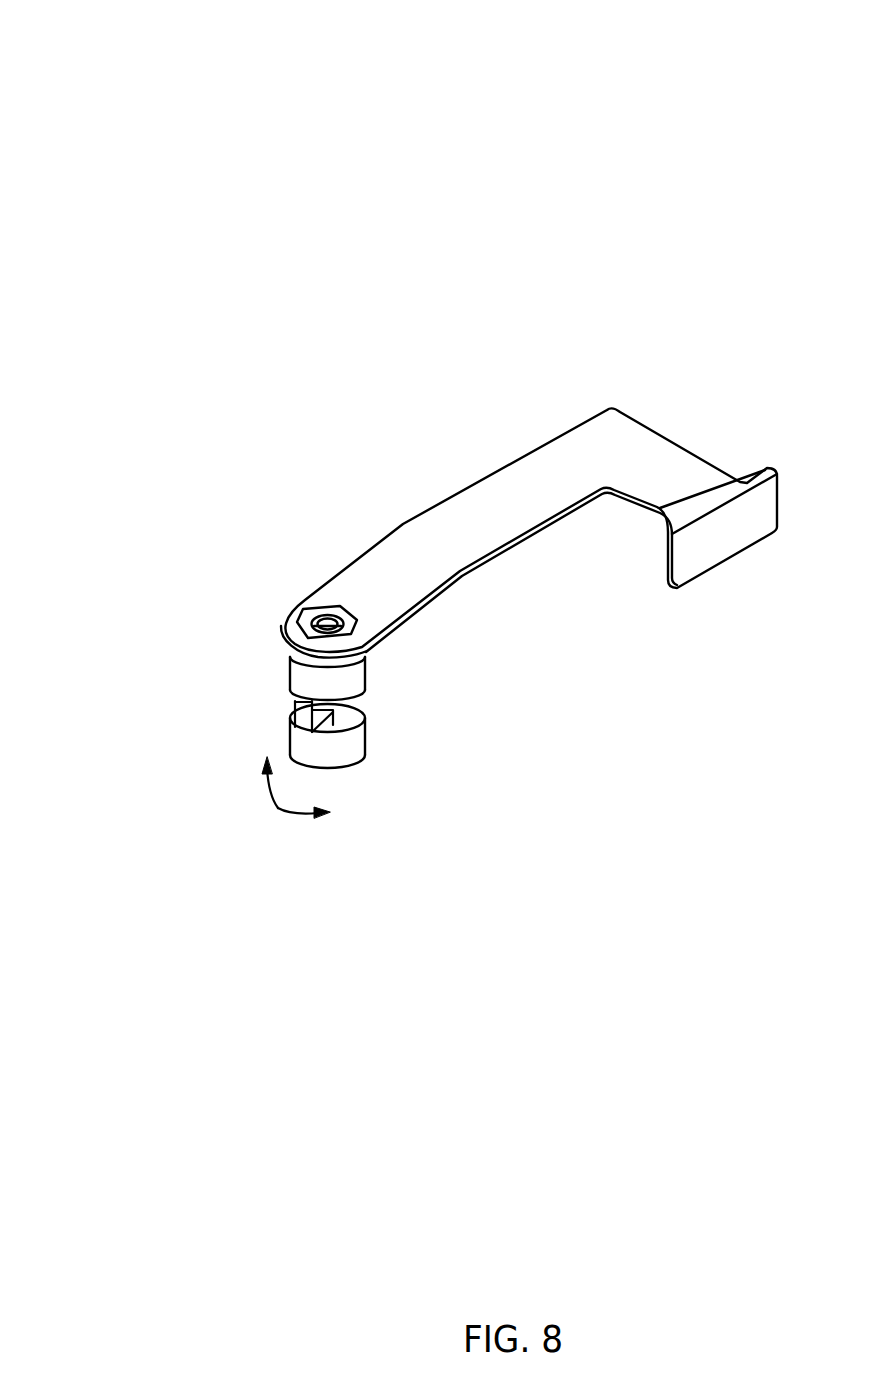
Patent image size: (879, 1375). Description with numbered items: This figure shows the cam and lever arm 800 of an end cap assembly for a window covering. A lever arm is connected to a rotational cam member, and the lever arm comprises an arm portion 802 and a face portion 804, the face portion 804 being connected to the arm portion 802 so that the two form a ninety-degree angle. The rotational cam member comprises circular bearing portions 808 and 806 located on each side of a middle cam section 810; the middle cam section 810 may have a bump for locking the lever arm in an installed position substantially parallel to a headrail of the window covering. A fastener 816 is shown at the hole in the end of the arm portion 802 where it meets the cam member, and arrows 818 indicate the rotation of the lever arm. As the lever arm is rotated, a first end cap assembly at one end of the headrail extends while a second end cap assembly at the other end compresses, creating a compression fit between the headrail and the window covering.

The arm assembly 800 is at (167, 72).
The arm portion 802 is at (542, 472).
The face portion 804 is at (718, 537).
The circular bearing portion 806 is at (357, 745).
The circular bearing portion 808 is at (355, 681).
The middle cam section 810 is at (305, 716).
The nut 816 is at (327, 622).
The rotation directions 818 is at (278, 808).